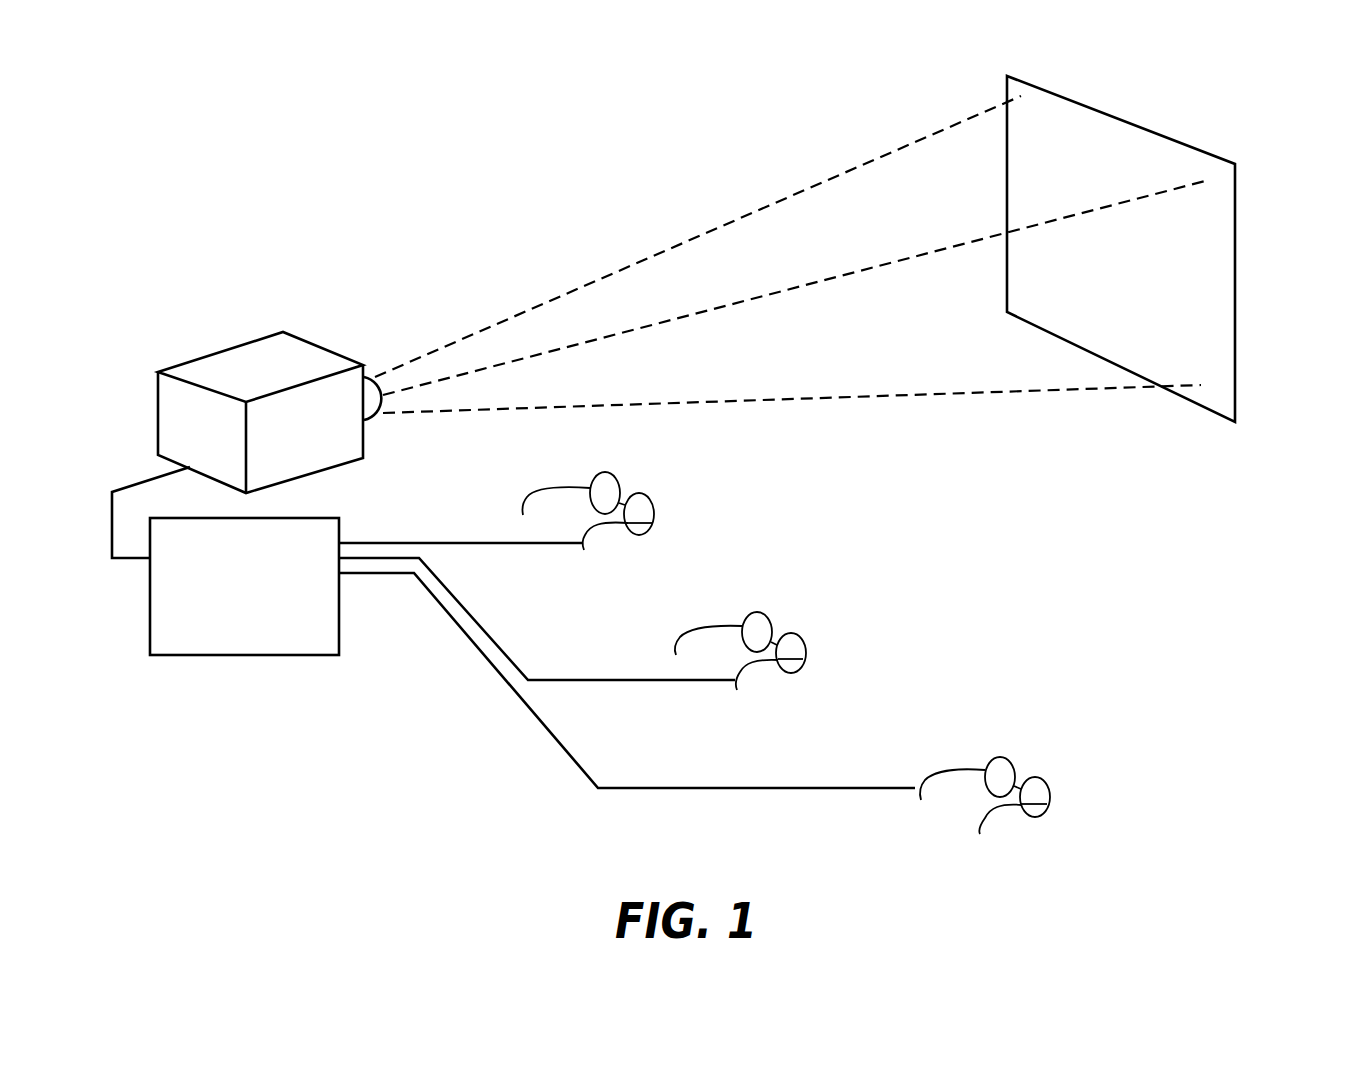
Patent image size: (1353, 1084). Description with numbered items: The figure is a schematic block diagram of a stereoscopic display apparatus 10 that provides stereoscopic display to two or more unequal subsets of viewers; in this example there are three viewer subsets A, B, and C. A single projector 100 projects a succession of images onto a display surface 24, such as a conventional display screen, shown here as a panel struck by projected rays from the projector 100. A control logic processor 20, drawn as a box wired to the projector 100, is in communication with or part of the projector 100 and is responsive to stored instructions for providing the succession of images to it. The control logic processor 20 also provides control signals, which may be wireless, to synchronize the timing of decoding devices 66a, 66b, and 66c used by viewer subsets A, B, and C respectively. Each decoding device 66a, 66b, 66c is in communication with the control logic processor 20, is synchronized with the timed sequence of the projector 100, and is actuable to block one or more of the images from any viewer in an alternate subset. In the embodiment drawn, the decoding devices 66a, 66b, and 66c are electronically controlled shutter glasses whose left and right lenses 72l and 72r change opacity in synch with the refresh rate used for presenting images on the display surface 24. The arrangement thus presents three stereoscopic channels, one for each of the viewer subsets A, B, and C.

The stereoscopic display apparatus 10 is at (288, 213).
The projector 100 is at (332, 448).
The control logic processor 20 is at (237, 655).
The display surface 24 is at (1232, 387).
The decoding device 66a is at (995, 762).
The decoding device 66b is at (715, 623).
The decoding device 66c is at (523, 502).
The left lens 72l is at (618, 482).
The right lens 72r is at (655, 510).
The viewer subset A is at (1133, 723).
The viewer subset B is at (945, 592).
The viewer subset C is at (757, 462).